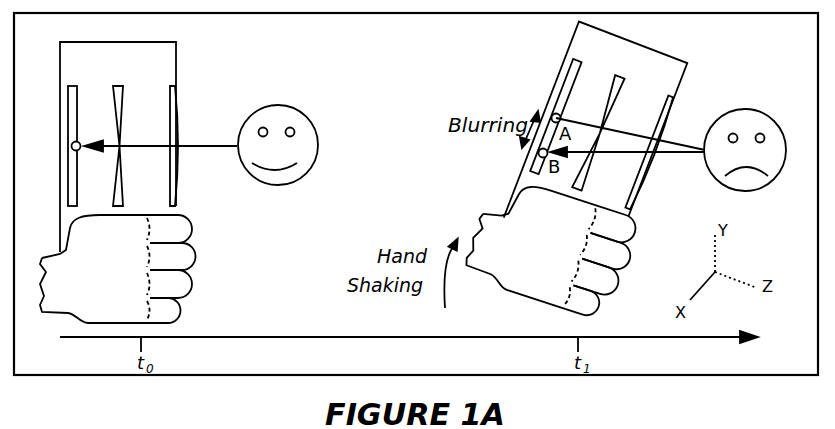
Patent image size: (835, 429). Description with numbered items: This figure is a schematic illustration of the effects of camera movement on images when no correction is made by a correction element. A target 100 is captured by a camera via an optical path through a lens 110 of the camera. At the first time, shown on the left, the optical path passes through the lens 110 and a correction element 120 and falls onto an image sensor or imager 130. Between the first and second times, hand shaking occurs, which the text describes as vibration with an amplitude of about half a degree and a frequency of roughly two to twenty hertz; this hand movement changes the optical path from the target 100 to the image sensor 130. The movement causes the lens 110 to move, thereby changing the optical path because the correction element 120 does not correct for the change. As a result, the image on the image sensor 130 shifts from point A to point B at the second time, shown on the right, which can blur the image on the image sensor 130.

The target 100 is at (292, 106).
The lens 110 is at (178, 87).
The correction element 120 is at (119, 86).
The image sensor 130 is at (72, 86).